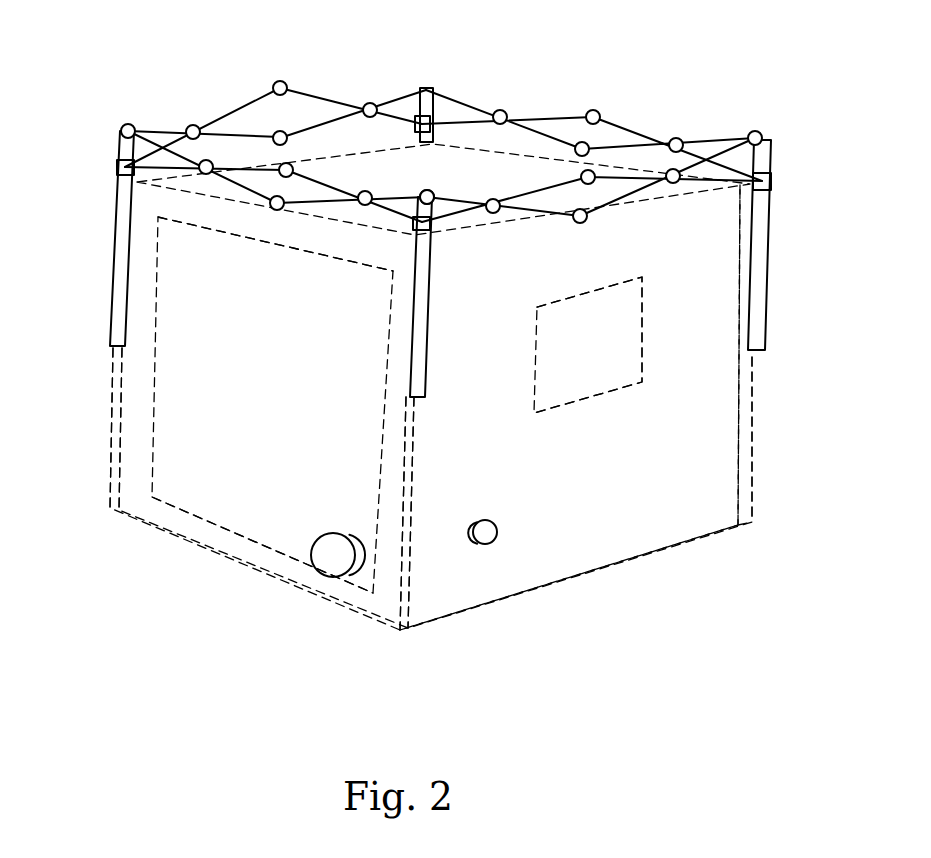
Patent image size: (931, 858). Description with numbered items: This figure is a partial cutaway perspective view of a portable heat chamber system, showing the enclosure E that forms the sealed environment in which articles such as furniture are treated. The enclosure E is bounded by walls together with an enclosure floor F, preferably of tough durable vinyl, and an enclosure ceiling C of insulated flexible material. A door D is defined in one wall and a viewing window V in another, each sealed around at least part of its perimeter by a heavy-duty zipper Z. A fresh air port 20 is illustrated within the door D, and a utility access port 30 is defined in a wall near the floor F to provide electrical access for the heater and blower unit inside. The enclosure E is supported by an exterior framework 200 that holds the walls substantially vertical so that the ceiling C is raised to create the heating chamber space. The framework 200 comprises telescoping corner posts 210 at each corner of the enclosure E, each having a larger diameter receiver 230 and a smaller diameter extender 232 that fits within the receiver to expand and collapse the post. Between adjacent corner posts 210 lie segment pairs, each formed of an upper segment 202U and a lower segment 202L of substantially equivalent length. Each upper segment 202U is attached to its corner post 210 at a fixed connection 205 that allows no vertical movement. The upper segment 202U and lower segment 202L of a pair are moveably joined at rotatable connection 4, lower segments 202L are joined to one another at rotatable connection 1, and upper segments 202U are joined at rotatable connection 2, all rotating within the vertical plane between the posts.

The exterior framework 200 is at (443, 171).
The upper segment 202U is at (247, 178).
The lower segment 202L is at (240, 156).
The fixed connection 205 is at (134, 127).
The corner post 210 is at (117, 170).
The receiver 230 is at (432, 292).
The extender 232 is at (403, 656).
The rotatable connection 1 is at (288, 169).
The rotatable connection 2 is at (281, 202).
The rotatable connection 4 is at (205, 160).
The fresh air port 20 is at (335, 553).
The utility access port 30 is at (487, 542).
The enclosure ceiling C is at (458, 182).
The door D is at (203, 347).
The enclosure E is at (320, 467).
The enclosure floor F is at (665, 533).
The viewing window V is at (562, 337).
The zipper Z is at (155, 414).